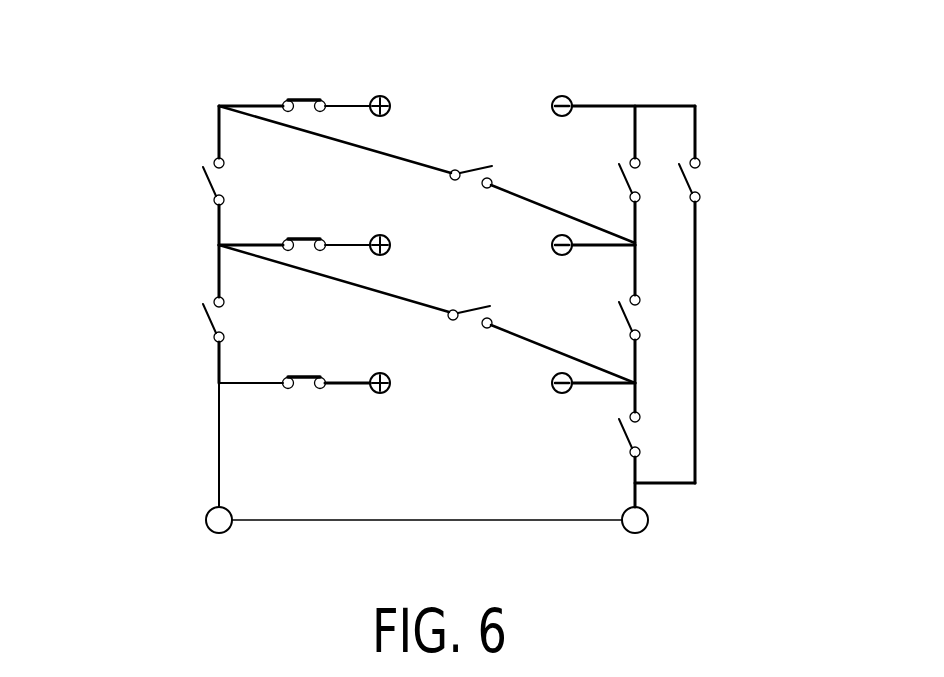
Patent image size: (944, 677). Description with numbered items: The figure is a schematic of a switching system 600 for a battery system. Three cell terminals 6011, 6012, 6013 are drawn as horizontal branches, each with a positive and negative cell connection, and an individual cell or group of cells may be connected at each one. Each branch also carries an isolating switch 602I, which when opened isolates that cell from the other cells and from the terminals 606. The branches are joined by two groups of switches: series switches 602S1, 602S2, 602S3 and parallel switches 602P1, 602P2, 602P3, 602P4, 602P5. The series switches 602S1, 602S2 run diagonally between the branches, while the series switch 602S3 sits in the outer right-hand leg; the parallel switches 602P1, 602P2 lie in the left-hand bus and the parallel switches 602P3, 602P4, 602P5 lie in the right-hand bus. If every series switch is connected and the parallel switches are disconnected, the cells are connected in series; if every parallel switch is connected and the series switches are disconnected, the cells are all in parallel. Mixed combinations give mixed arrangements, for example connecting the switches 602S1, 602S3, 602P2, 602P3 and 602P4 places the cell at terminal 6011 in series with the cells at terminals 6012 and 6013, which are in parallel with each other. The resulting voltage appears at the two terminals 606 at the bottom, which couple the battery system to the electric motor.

The switching system 600 is at (203, 85).
The isolating switch 602I is at (313, 96).
The cell terminal 6013 is at (550, 105).
The cell terminal 6012 is at (550, 243).
The cell terminal 6011 is at (550, 385).
The parallel switch 602P3 is at (630, 158).
The parallel switch 602P2 is at (213, 199).
The parallel switch 602P1 is at (213, 339).
The parallel switch 602P4 is at (641, 334).
The parallel switch 602P5 is at (641, 452).
The series switch 602S3 is at (703, 168).
The series switch 602S2 is at (448, 179).
The series switch 602S1 is at (495, 321).
The terminals 606 is at (430, 520).